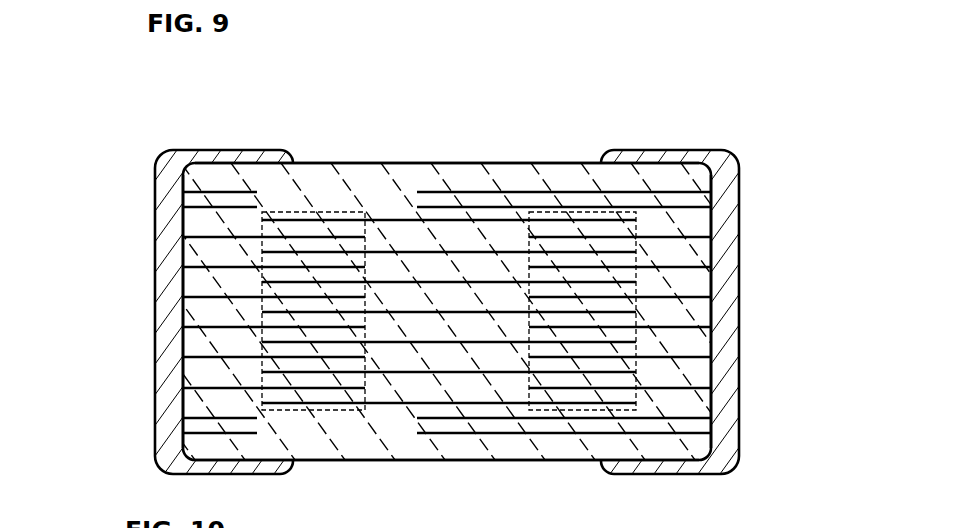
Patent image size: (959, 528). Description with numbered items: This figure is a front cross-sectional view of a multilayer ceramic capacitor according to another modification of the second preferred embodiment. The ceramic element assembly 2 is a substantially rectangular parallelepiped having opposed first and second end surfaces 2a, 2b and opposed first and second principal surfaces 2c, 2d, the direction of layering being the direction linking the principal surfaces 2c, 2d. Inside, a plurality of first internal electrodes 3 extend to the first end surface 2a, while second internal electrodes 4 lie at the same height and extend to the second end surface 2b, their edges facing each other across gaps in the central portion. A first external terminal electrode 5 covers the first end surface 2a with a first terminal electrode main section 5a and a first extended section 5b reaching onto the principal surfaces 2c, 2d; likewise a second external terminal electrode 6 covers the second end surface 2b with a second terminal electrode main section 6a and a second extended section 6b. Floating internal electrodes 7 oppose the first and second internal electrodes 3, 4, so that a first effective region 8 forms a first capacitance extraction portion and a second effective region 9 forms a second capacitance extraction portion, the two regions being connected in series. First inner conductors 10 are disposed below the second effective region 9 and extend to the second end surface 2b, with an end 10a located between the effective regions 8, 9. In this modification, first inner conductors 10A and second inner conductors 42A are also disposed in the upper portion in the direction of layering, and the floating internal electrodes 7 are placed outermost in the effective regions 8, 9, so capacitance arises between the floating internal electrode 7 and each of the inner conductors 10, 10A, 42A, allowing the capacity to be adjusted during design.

The ceramic element assembly 2 is at (447, 309).
The first end surface 2a is at (700, 182).
The second end surface 2b is at (187, 183).
The first principal surface 2c is at (545, 163).
The second principal surface 2d is at (320, 462).
The first internal electrodes 3 is at (711, 238).
The second internal electrodes 4 is at (212, 357).
The second inner conductors 42A is at (228, 190).
The first external terminal electrode 5 is at (660, 301).
The first terminal electrode main section 5a is at (722, 243).
The first extended section 5b is at (665, 150).
The second external terminal electrode 6 is at (253, 326).
The second terminal electrode main section 6a is at (155, 432).
The second extended section 6b is at (207, 474).
The floating internal electrodes 7 is at (381, 220).
The first effective region 8 is at (583, 212).
The second effective region 9 is at (320, 212).
The first inner conductors 10 is at (612, 457).
The end of the first inner conductor 10a is at (432, 433).
The first inner conductors 10A is at (563, 192).